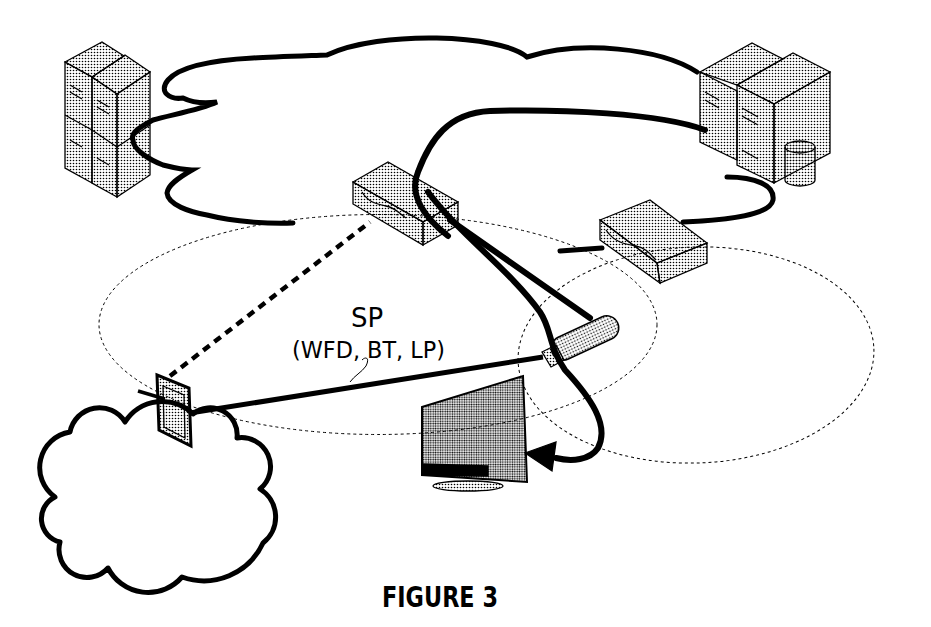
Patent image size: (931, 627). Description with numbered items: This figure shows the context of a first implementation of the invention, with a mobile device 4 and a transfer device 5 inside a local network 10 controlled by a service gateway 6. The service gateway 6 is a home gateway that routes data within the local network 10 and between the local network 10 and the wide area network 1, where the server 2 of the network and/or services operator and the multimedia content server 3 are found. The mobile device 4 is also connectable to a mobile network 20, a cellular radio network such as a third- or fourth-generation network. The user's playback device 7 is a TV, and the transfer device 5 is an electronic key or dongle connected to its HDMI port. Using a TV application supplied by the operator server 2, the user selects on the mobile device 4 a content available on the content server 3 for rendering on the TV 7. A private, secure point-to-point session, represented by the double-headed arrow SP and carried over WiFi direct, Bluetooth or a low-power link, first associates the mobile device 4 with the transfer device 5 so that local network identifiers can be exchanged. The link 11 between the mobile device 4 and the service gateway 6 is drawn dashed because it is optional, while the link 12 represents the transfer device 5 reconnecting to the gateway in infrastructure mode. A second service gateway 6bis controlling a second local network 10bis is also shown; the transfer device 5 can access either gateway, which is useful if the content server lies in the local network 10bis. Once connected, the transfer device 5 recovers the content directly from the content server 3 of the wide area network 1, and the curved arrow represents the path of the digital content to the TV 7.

The Internet / wide area network 1 is at (487, 20).
The server of the network and/or services operator 2 is at (148, 45).
The multimedia content server 3 is at (813, 44).
The mobile device 4 is at (195, 400).
The transfer device 5 is at (632, 338).
The service gateway 6 is at (353, 182).
The second service gateway 6bis is at (665, 214).
The playback device 7 is at (422, 458).
The local network 10 is at (134, 283).
The second local network 10bis is at (640, 462).
The link between the mobile device and the service gateway 11 is at (230, 325).
The link to the service gateway 12 is at (512, 240).
The mobile network 20 is at (81, 413).